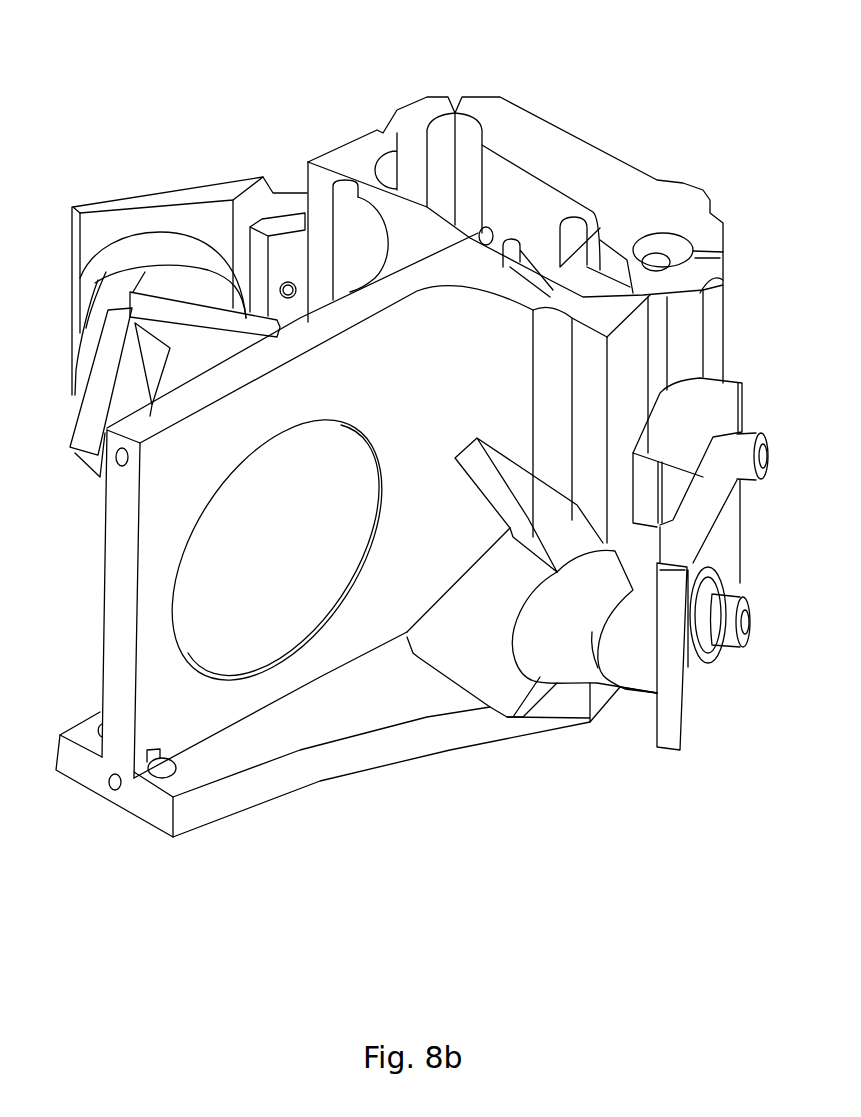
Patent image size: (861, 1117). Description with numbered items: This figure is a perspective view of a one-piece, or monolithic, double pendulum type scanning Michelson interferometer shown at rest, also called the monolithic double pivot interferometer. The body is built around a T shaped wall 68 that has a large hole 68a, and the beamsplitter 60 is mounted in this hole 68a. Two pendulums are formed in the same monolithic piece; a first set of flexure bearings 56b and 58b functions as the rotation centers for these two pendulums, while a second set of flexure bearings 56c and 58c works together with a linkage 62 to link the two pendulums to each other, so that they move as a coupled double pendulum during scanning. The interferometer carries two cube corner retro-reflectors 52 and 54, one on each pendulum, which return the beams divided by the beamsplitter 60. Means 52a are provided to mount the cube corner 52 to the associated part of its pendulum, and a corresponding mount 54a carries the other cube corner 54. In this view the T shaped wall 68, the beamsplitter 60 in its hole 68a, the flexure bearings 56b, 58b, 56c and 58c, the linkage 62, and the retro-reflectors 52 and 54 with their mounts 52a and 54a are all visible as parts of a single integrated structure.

The cube corner retro-reflector 52 is at (485, 632).
The means to mount the cube corner 52a is at (714, 554).
The cube corner retro-reflector 54 is at (98, 410).
The motor mount block 54a is at (107, 208).
The flexure bearing 56b is at (725, 313).
The flexure bearing 56c is at (722, 228).
The flexure bearing 58b is at (383, 133).
The flexure bearing 58c is at (455, 110).
The beamsplitter 60 is at (277, 607).
The linkage 62 is at (563, 167).
The T shaped wall 68 is at (117, 543).
The hole 68a is at (253, 680).